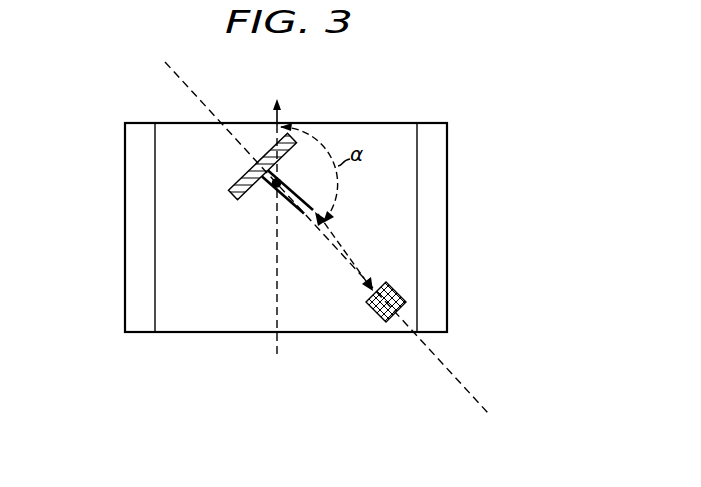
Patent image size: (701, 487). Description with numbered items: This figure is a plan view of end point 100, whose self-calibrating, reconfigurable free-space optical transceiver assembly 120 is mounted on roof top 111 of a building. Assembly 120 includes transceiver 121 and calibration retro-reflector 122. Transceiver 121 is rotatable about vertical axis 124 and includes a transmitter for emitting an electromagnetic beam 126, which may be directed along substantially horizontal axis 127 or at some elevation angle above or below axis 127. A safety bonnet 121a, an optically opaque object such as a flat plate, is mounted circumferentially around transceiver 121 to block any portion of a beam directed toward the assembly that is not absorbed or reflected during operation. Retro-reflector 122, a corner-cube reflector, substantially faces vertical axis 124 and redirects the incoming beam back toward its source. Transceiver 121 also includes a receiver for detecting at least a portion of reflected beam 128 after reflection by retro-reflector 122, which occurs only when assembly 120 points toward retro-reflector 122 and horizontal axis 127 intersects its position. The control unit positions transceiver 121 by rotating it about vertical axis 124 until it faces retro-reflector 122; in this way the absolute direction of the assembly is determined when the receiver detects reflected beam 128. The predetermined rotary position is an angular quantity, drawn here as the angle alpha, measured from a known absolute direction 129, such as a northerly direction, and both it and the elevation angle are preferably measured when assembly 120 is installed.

The end point 100 is at (459, 99).
The roof top 111 is at (212, 333).
The optical transceiver assembly 120 is at (200, 216).
The transceiver 121 is at (290, 208).
The safety bonnet 121a is at (242, 168).
The calibration retro-reflector 122 is at (376, 308).
The vertical axis 124 is at (270, 189).
The electromagnetic beam 126 is at (341, 254).
The horizontal axis 127 is at (477, 398).
The reflected beam 128 is at (354, 258).
The known absolute direction 129 is at (283, 118).